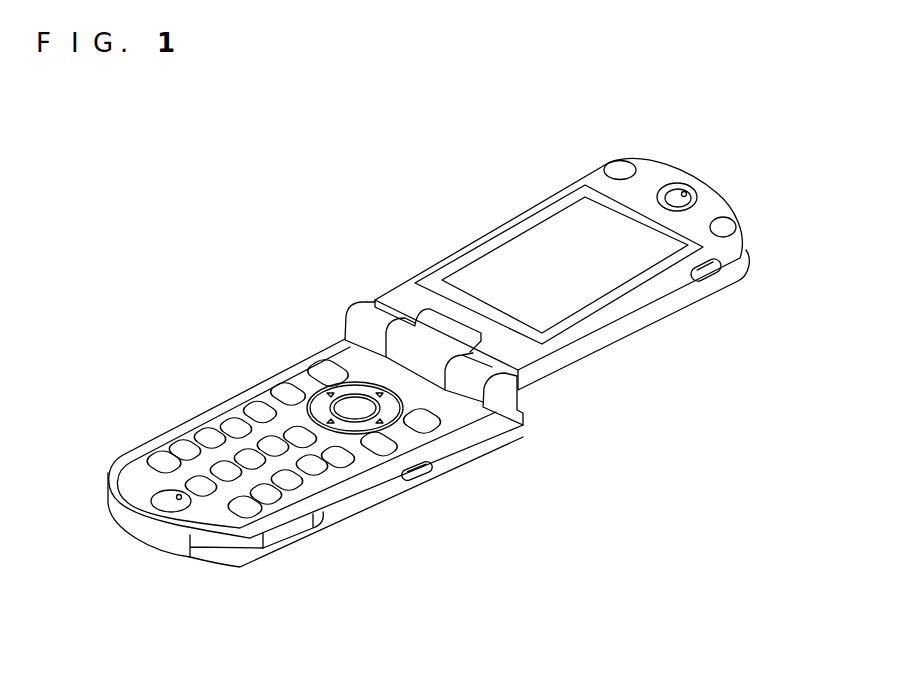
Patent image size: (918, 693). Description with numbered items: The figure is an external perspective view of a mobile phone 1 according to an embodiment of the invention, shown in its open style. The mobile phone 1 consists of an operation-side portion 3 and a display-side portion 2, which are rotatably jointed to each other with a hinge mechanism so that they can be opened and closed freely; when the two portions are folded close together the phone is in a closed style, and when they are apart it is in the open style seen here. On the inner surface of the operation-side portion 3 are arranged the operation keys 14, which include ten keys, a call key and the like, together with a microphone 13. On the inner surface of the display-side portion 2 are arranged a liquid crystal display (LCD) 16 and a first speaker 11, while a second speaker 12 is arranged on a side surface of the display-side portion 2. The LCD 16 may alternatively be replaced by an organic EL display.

The mobile phone 1 is at (221, 178).
The display-side portion 2 is at (623, 320).
The operation-side portion 3 is at (480, 447).
The first speaker 11 is at (687, 193).
The second speaker 12 is at (721, 271).
The microphone 13 is at (152, 493).
The operation keys 14 is at (132, 427).
The liquid crystal display (LCD) 16 is at (517, 247).